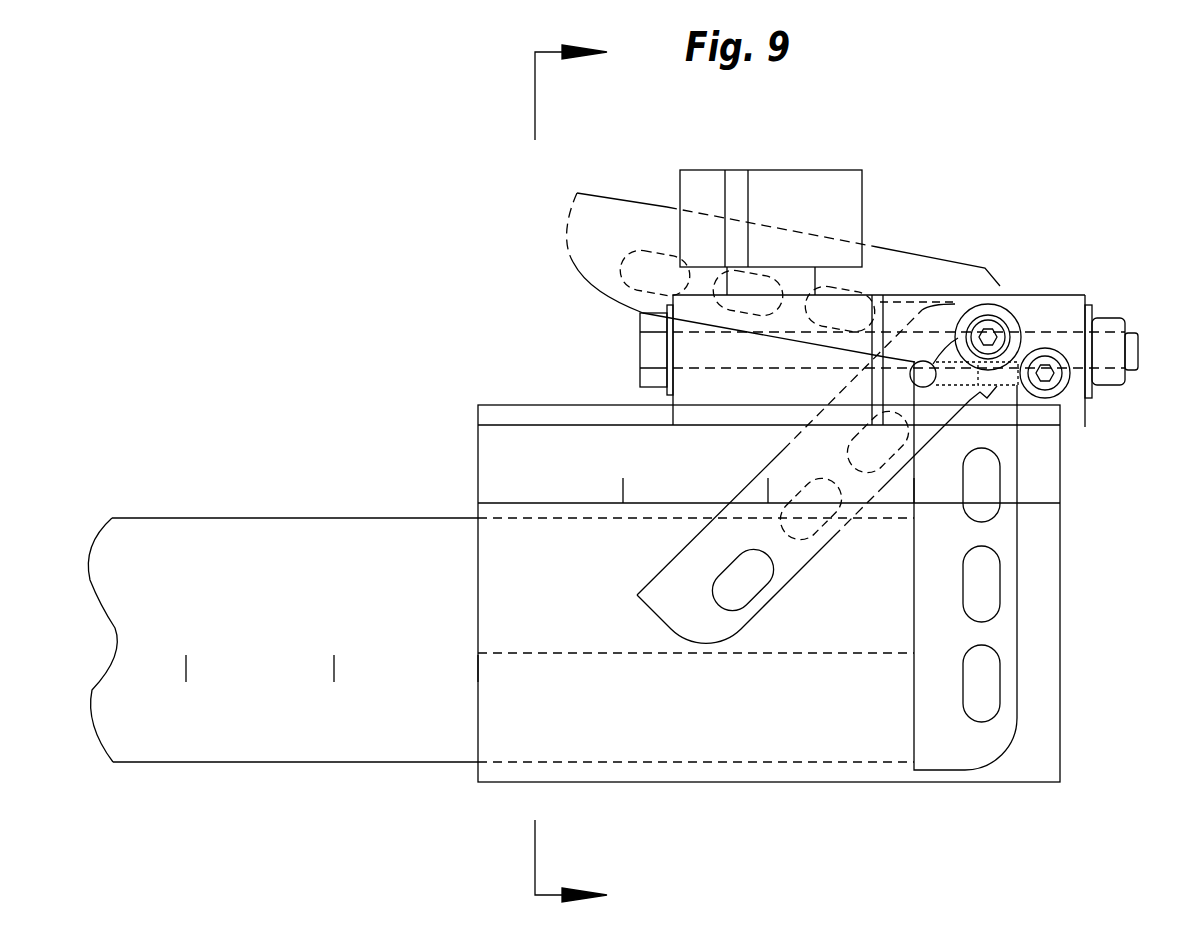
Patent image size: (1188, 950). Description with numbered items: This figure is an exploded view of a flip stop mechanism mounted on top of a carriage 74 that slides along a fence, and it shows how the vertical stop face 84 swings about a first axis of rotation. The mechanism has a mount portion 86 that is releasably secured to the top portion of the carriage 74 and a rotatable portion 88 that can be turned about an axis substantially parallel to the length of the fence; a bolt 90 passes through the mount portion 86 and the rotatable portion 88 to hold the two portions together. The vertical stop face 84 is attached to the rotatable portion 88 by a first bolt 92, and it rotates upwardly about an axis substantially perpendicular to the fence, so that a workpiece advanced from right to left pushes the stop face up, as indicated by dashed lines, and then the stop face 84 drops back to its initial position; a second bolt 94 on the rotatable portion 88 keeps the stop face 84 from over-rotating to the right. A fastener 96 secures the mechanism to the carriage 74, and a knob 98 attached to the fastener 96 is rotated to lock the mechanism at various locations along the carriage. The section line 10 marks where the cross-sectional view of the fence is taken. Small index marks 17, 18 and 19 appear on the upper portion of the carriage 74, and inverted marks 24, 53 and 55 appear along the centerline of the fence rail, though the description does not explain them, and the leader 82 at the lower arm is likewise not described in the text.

The section line 10- 10 is at (589, 475).
The carriage 74 is at (492, 405).
The angled slotted arm 82 is at (914, 770).
The vertical stop face 84 is at (1002, 630).
The mount portion 86 is at (690, 345).
The rotatable portion 88 is at (1042, 300).
The bolt 90 is at (1105, 330).
The first bolt 92 is at (988, 330).
The second bolt 94 is at (1065, 395).
The fastener 96 is at (660, 378).
The knob 98 is at (800, 170).
The scale mark 17 is at (625, 479).
The scale mark 18 is at (770, 479).
The scale mark 19 is at (915, 479).
The scale mark 24 is at (467, 668).
The scale mark 53 is at (323, 668).
The scale mark 55 is at (175, 668).